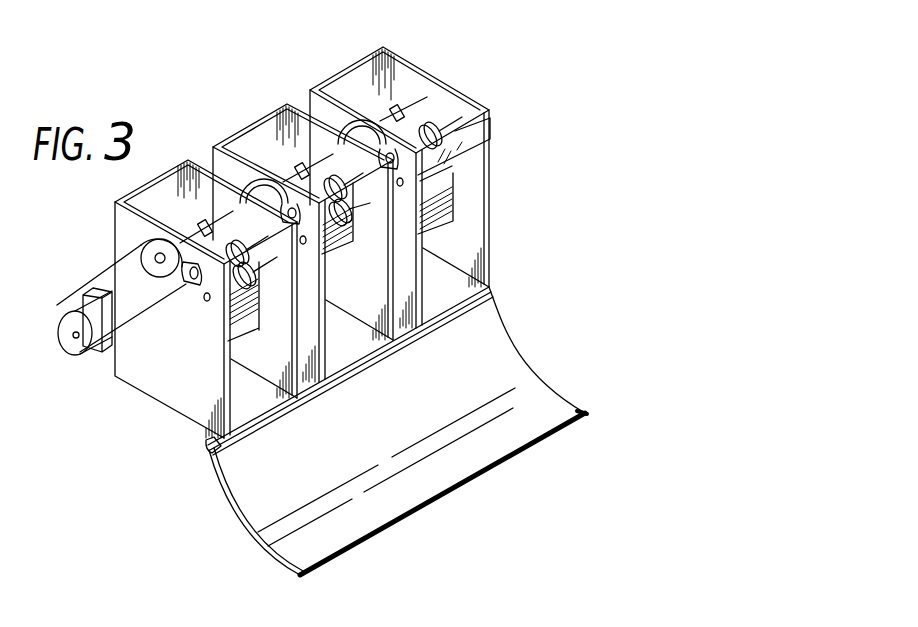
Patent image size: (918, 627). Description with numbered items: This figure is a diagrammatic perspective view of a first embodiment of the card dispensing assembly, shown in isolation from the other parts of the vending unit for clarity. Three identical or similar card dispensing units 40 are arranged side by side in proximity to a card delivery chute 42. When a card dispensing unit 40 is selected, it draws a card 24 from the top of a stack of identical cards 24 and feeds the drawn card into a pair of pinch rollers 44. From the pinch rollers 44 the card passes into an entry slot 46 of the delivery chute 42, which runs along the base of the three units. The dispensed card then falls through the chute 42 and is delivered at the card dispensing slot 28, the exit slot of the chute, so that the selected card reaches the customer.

The card dispensing unit 40 is at (318, 242).
The card 24 is at (489, 126).
The pinch rollers 44 is at (353, 230).
The card delivery chute 42 is at (385, 424).
The card dispensing slot 28 is at (465, 487).
The entry slot 46 is at (209, 452).